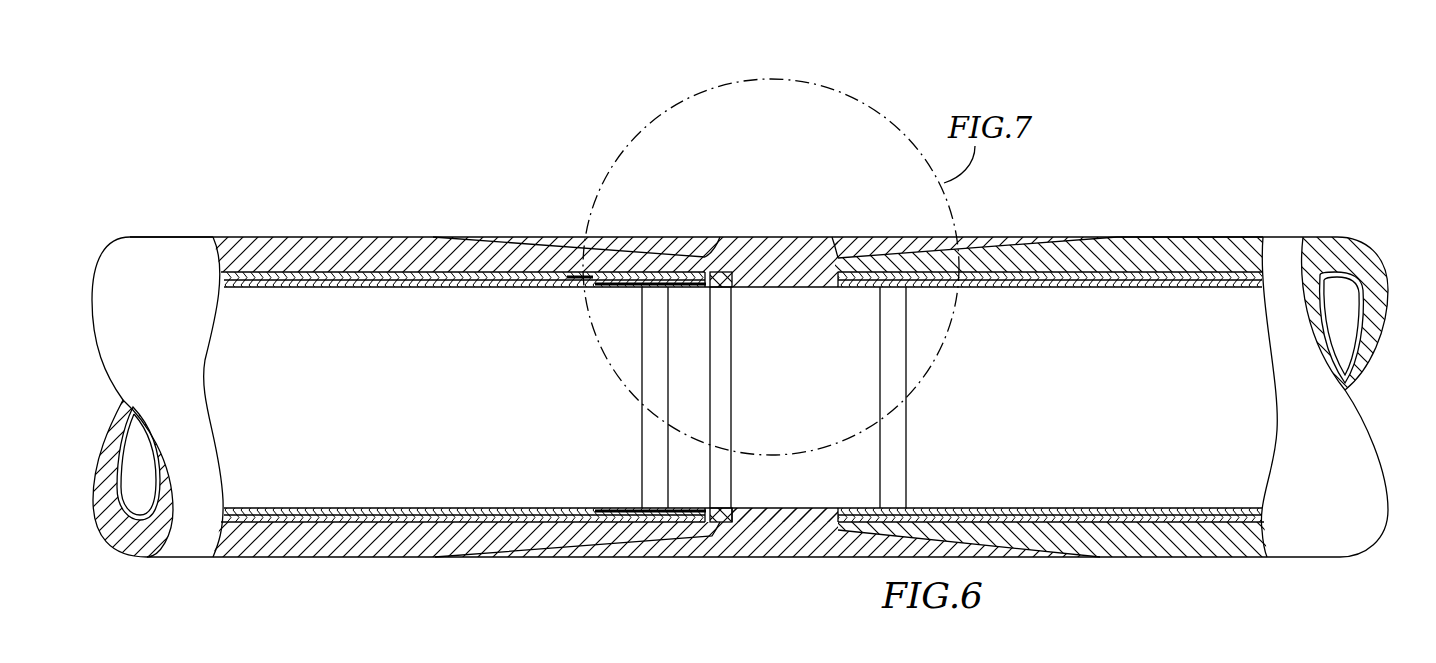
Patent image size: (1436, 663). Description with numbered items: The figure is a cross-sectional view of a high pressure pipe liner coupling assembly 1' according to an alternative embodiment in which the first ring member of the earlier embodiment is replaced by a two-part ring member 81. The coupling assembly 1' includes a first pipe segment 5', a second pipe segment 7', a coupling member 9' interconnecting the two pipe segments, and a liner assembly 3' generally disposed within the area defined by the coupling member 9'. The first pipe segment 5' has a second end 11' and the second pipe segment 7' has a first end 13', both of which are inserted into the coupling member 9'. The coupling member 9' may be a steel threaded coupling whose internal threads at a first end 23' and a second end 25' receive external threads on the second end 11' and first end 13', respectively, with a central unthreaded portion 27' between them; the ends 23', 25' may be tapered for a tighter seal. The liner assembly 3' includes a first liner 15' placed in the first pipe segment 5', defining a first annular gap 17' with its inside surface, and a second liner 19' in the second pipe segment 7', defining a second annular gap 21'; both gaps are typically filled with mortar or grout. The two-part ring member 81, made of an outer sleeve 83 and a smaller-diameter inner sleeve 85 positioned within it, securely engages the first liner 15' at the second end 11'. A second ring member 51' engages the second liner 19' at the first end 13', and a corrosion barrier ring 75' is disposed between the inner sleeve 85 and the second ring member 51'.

The coupling assembly 1' is at (735, 294).
The liner assembly 3' is at (867, 397).
The first pipe segment 5' is at (677, 376).
The second pipe segment 7' is at (1111, 375).
The coupling member 9' is at (569, 220).
The second end of first pipe segment 11' is at (720, 238).
The first end of second pipe segment 13' is at (827, 226).
The first liner 15' is at (743, 397).
The first annular gap 17' is at (743, 364).
The second liner 19' is at (1013, 230).
The second annular gap 21' is at (1190, 230).
The first end of coupling member 23' is at (737, 552).
The second end of coupling member 25' is at (1052, 560).
The central unthreaded portion 27' is at (789, 551).
The second ring member 51' is at (869, 404).
The corrosion barrier ring 75' is at (733, 443).
The two-part ring member 81 is at (640, 300).
The outer sleeve 83 is at (650, 525).
The inner sleeve 85 is at (703, 508).